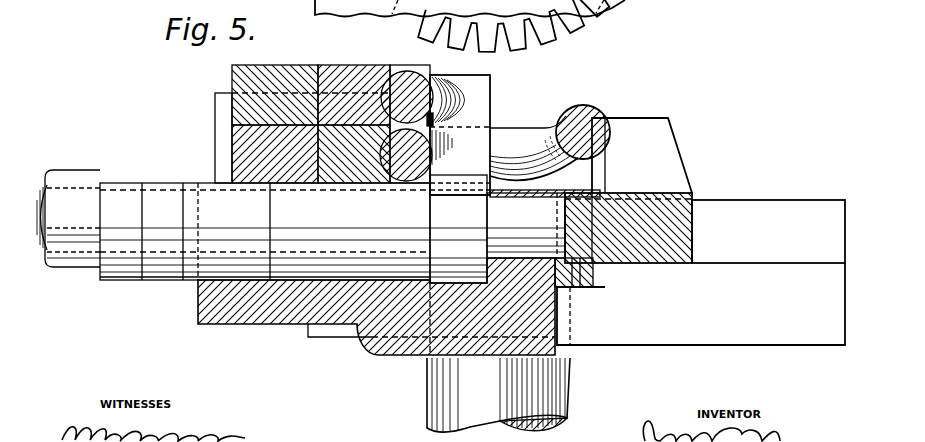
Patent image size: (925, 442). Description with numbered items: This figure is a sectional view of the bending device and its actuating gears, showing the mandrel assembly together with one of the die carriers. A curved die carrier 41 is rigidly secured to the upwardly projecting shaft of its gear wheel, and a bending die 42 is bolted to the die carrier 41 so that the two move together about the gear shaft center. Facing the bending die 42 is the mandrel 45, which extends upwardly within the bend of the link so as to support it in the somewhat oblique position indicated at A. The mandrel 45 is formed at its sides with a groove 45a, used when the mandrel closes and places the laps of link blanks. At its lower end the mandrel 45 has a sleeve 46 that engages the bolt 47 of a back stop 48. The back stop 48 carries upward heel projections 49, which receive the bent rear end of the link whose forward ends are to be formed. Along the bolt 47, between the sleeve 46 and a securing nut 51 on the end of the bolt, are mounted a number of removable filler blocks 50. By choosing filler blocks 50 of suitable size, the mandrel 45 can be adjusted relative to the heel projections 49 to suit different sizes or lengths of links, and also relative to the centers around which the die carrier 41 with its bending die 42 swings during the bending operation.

The die carrier 41 is at (240, 130).
The bending die 42 is at (352, 137).
The mandrel 45 is at (483, 116).
The groove 45a is at (447, 96).
The oblique position of the link A is at (583, 99).
The sleeve 46 is at (458, 229).
The bolt 47 is at (526, 225).
The back stop 48 is at (660, 243).
The upward projection 49 is at (642, 155).
The filler block 50 is at (196, 195).
The securing nut 51 is at (68, 218).